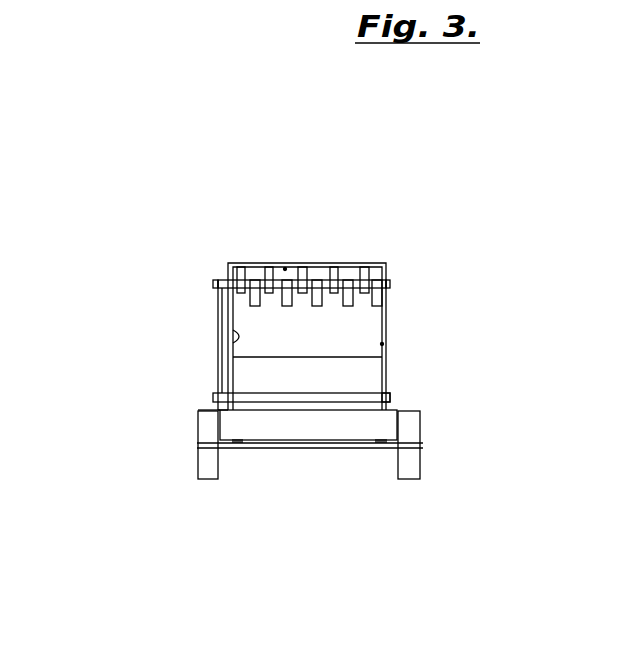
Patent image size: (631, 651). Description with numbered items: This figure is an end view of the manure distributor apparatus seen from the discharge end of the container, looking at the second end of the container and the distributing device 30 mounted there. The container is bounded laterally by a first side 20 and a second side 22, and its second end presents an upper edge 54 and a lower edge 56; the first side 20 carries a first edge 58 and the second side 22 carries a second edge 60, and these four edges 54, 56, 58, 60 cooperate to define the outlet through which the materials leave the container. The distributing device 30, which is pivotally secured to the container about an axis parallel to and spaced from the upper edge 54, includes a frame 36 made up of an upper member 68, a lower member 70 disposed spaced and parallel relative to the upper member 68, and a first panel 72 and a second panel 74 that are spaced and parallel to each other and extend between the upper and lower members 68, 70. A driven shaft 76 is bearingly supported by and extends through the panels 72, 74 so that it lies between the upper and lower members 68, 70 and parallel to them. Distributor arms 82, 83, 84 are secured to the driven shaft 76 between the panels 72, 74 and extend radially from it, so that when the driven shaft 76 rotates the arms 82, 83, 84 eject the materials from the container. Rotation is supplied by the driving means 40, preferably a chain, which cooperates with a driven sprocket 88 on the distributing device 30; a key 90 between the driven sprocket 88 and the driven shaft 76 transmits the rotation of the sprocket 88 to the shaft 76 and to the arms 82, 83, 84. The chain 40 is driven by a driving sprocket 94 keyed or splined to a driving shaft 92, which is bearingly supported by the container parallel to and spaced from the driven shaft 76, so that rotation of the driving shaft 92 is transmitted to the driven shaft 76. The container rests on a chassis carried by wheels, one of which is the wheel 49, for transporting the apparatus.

The first side 20 is at (229, 265).
The second side 22 is at (387, 265).
The distributing device 30 is at (383, 249).
The frame 36 is at (385, 362).
The driving means 40 is at (222, 370).
The wheel 49 is at (208, 457).
The upper edge 54 is at (285, 268).
The lower edge 56 is at (268, 405).
The first edge 58 is at (219, 350).
The second edge 60 is at (385, 341).
The upper member 68 is at (343, 268).
The lower member 70 is at (345, 405).
The first panel 72 is at (226, 382).
The second panel 74 is at (387, 380).
The driven shaft 76 is at (390, 284).
The distributor arm 82 is at (286, 205).
The distributor arm 83 is at (255, 302).
The distributor arm 84 is at (246, 268).
The driven sprocket 88 is at (218, 298).
The key 90 is at (213, 283).
The driving shaft 92 is at (387, 405).
The driving sprocket 94 is at (216, 412).